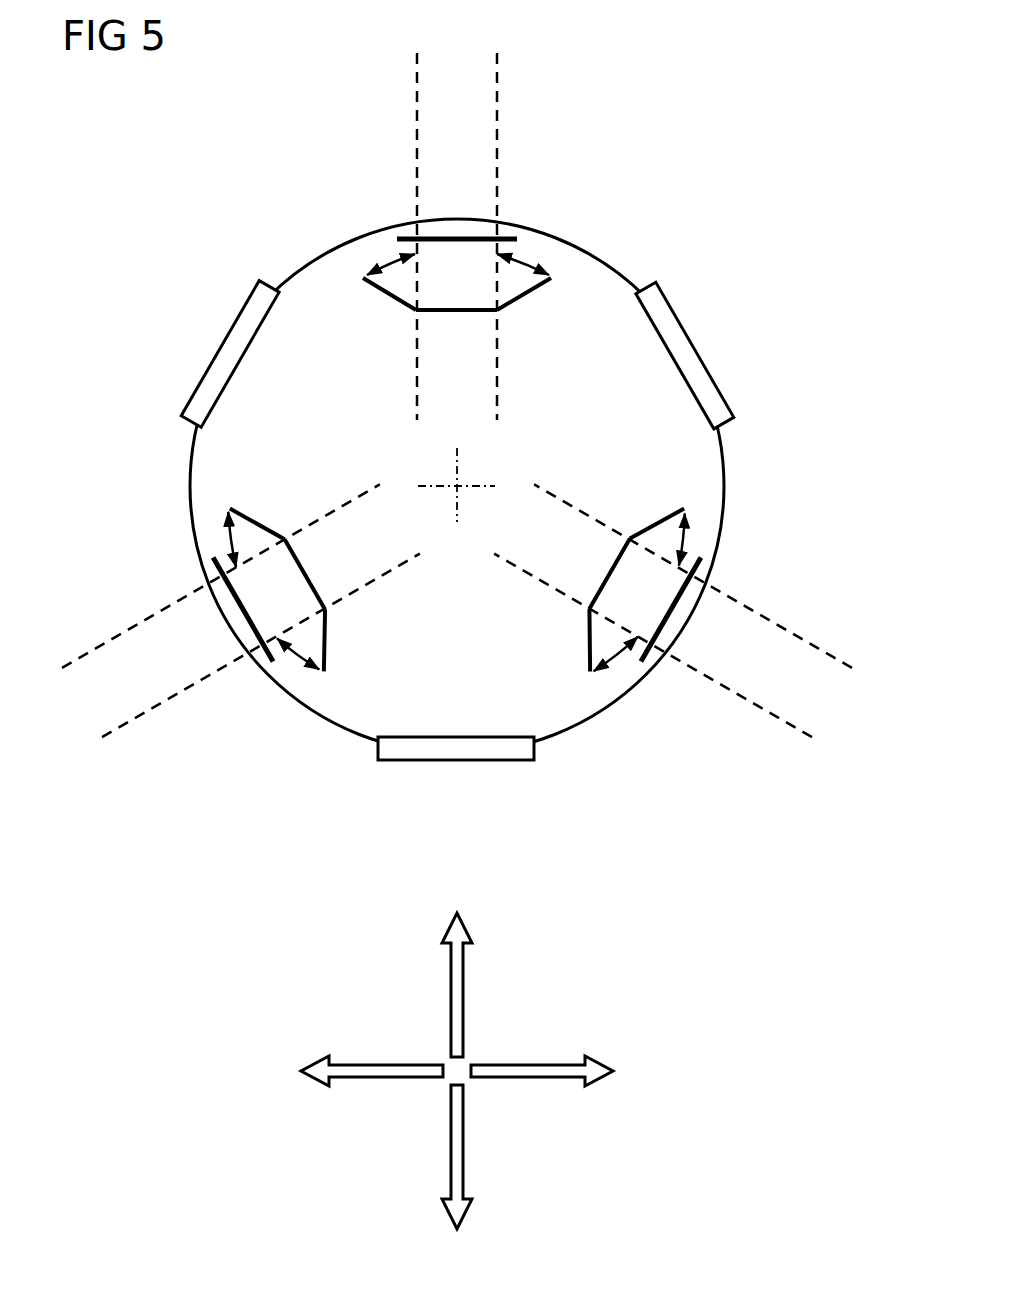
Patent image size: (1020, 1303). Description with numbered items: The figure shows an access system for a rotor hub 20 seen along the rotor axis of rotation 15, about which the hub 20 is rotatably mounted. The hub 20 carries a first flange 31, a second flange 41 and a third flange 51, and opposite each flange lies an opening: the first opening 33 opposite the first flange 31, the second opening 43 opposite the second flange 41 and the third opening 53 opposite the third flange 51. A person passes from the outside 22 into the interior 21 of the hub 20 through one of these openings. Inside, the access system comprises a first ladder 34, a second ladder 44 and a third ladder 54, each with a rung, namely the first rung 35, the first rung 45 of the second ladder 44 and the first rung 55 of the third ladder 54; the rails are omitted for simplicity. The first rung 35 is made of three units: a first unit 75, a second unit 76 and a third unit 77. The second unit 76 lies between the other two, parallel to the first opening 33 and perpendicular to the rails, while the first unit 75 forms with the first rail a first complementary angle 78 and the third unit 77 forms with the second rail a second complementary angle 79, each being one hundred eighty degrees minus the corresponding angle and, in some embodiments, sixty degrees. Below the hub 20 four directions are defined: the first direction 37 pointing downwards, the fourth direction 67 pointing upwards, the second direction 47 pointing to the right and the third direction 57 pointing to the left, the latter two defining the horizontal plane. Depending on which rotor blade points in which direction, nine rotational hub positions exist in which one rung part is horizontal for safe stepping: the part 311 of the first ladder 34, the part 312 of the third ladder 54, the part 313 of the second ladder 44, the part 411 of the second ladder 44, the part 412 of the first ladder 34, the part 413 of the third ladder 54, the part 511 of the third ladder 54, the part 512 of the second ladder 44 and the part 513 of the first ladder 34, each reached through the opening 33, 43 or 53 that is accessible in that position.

The rotor axis of rotation 15 is at (457, 490).
The hub 20 is at (518, 102).
The interior 21 is at (722, 460).
The outside 22 is at (534, 486).
The first flange 31 is at (456, 749).
The first opening 33 is at (455, 236).
The first ladder 34 is at (505, 345).
The first rung 35 is at (456, 377).
The first direction 37 is at (458, 1160).
The second flange 41 is at (695, 358).
The second opening 43 is at (242, 615).
The second ladder 44 is at (311, 464).
The first rung of the second ladder 45 is at (351, 564).
The second direction 47 is at (545, 1072).
The third flange 51 is at (228, 357).
The third opening 53 is at (676, 615).
The third ladder 54 is at (509, 616).
The first rung of the third ladder 55 is at (566, 564).
The third direction 57 is at (368, 1068).
The fourth direction 67 is at (456, 982).
The first unit 75 is at (351, 320).
The second unit 76 is at (456, 377).
The third unit 77 is at (561, 320).
The first complementary angle 78 is at (385, 260).
The second complementary angle 79 is at (530, 260).
The part of the first ladder 311 is at (457, 312).
The part of the third ladder 312 is at (588, 645).
The part of the second ladder 313 is at (327, 645).
The part of the second ladder 411 is at (305, 568).
The part of the first ladder 412 is at (527, 293).
The part of the third ladder 413 is at (652, 524).
The part of the third ladder 511 is at (612, 568).
The part of the second ladder 512 is at (258, 522).
The part of the first ladder 513 is at (387, 293).